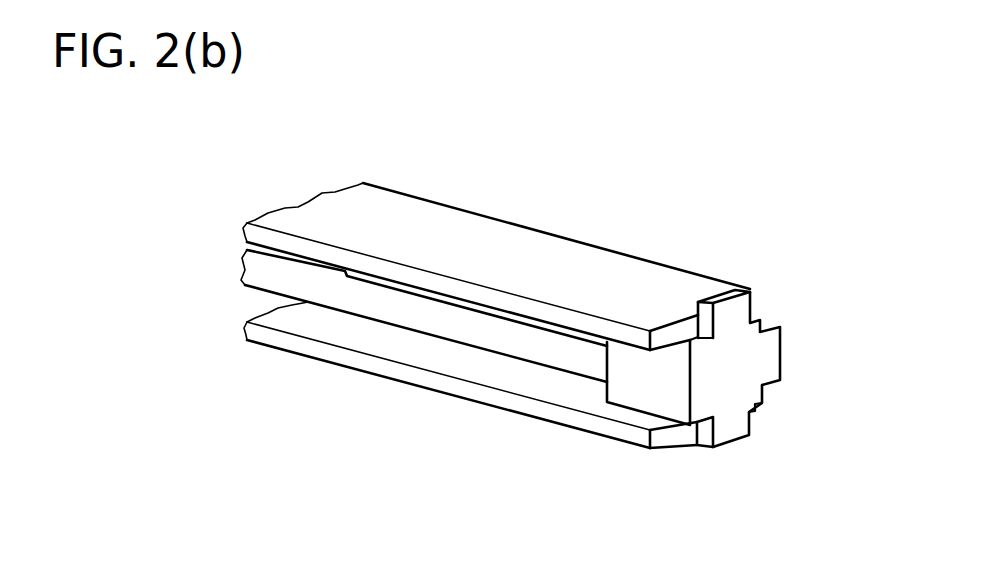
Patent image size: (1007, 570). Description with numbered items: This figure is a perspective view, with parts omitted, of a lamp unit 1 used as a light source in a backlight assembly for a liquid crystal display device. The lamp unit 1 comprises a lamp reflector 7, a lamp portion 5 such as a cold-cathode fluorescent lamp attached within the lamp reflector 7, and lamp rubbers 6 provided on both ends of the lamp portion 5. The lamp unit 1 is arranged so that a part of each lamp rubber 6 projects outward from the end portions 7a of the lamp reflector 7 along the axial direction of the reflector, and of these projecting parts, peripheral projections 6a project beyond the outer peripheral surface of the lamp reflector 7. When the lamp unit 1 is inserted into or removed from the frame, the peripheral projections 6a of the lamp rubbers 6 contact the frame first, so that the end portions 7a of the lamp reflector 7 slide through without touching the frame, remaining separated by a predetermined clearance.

The lamp unit 1 is at (737, 262).
The lamp portion 5 is at (394, 308).
The lamp rubber 6 is at (650, 385).
The peripheral projection 6a is at (738, 310).
The lamp reflector 7 is at (501, 243).
The end portion of the lamp reflector 7a is at (665, 333).